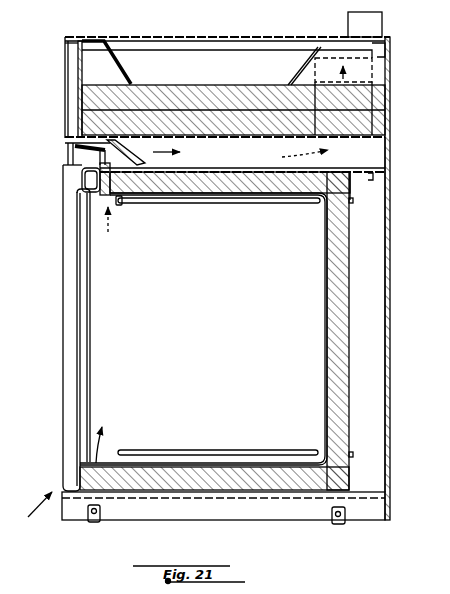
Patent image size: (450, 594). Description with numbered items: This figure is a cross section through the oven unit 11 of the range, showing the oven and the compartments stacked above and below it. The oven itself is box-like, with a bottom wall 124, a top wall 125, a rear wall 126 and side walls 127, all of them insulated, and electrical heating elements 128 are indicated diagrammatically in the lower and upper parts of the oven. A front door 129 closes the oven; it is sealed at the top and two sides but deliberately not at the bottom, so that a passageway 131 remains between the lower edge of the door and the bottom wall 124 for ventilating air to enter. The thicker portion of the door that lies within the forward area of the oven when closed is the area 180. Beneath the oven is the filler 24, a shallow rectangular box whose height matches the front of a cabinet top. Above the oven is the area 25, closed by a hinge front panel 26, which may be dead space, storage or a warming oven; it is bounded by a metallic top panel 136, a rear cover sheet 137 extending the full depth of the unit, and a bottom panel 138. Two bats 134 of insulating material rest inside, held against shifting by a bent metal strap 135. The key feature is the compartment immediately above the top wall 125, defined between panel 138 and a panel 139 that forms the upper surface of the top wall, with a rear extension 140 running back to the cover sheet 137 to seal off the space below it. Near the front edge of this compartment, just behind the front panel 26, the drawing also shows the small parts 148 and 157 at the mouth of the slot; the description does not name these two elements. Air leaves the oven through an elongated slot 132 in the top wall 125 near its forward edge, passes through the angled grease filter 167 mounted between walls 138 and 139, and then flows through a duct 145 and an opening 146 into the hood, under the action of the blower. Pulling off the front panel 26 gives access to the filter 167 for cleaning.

The oven unit 11 is at (370, 247).
The filler 24 is at (62, 508).
The area 25 is at (73, 75).
The hinge front panel 26 is at (75, 55).
The bottom wall 124 is at (233, 463).
The top wall 125 is at (252, 197).
The rear wall 126 is at (325, 290).
The side walls 127 is at (170, 269).
The electrical heating elements 128 is at (218, 203).
The front door 129 is at (65, 357).
The passageway 131 is at (78, 472).
The elongated slot 132 is at (118, 198).
The bats of insulating material 134 is at (382, 117).
The metal strap 135 is at (133, 80).
The top panel 136 is at (265, 37).
The cover sheet 137 is at (392, 192).
The panel 138 is at (372, 148).
The panel 139 is at (230, 158).
The extension 140 is at (372, 177).
The duct 145 is at (363, 70).
The opening 146 is at (377, 62).
The sealing strip 148 is at (105, 195).
The gasket 157 is at (82, 170).
The filter 167 is at (140, 160).
The door area 180 is at (92, 323).